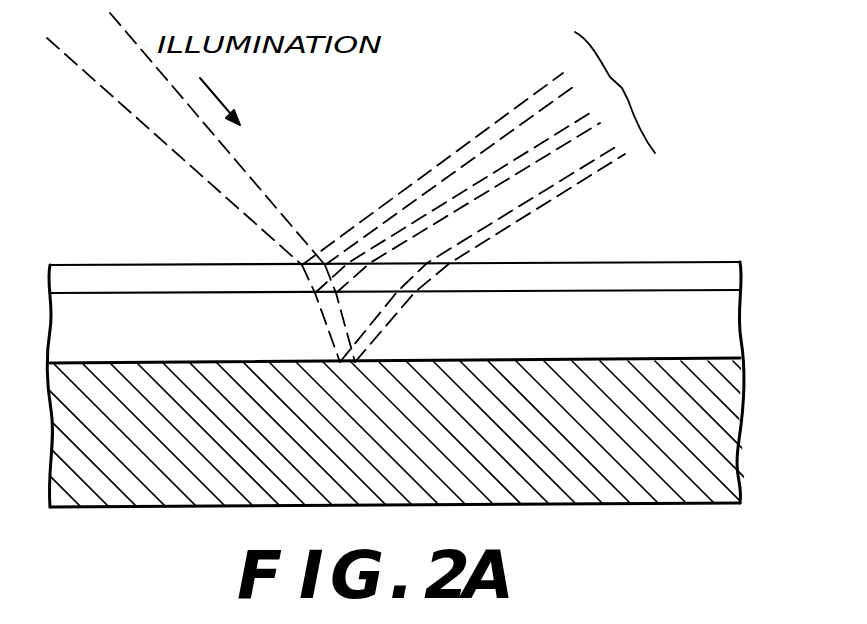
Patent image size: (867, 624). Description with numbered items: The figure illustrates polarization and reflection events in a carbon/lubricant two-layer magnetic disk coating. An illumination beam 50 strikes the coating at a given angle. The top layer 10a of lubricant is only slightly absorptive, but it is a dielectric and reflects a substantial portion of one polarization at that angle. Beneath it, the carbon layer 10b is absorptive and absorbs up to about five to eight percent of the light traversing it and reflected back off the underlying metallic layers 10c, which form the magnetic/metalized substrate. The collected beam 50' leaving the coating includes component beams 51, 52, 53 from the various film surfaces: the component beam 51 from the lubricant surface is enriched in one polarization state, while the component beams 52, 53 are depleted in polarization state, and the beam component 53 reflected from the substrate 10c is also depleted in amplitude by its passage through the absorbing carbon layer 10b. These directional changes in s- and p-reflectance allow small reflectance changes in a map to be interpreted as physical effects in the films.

The top layer of lubricant 10a is at (697, 275).
The carbon layer 10b is at (700, 327).
The underlying metallic layers 10c is at (695, 436).
The beam 50 is at (201, 187).
The collected beam 50' is at (630, 92).
The component beam 51 is at (470, 147).
The component beam 52 is at (550, 145).
The beam component 53 is at (566, 181).